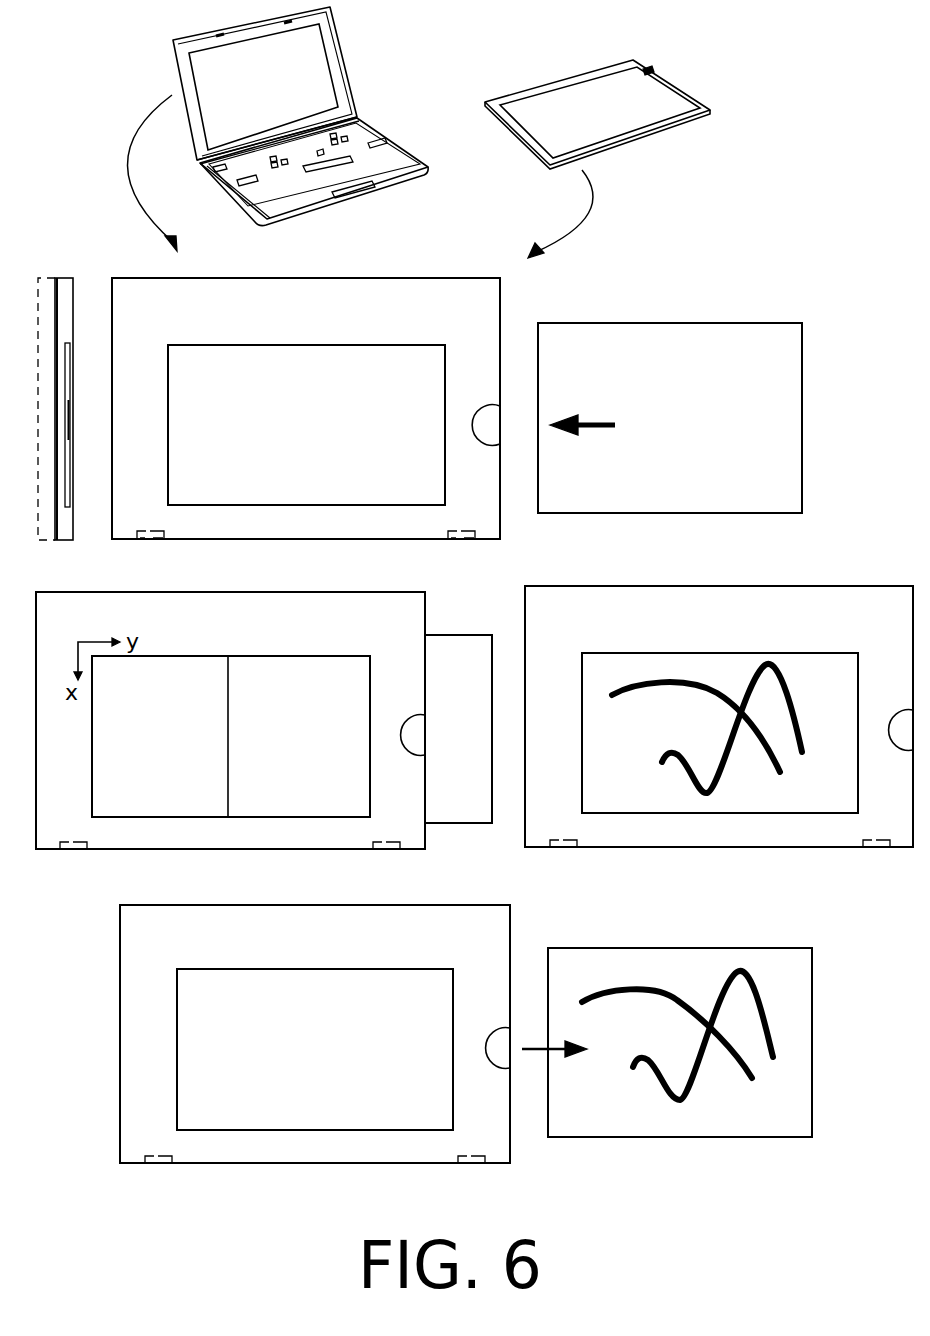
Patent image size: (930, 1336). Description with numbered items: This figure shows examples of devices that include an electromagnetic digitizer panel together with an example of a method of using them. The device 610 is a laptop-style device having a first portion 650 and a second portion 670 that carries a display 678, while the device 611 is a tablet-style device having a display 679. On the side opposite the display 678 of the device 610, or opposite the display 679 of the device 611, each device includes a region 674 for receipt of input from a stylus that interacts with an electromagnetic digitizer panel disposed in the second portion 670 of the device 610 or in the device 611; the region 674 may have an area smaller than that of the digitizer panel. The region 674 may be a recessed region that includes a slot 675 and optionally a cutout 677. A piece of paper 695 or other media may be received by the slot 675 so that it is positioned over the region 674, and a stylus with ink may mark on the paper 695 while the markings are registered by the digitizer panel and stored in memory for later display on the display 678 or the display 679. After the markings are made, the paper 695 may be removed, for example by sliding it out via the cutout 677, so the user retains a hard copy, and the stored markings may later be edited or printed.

The device 610 is at (240, 125).
The device 611 is at (632, 146).
The second portion 670 is at (282, 82).
The display 678 is at (295, 68).
The first portion 650 is at (307, 212).
The display 679 is at (565, 93).
The slot 675 is at (68, 370).
The region 674 is at (335, 439).
The cutout 677 is at (490, 413).
The piece of paper 695 is at (782, 367).